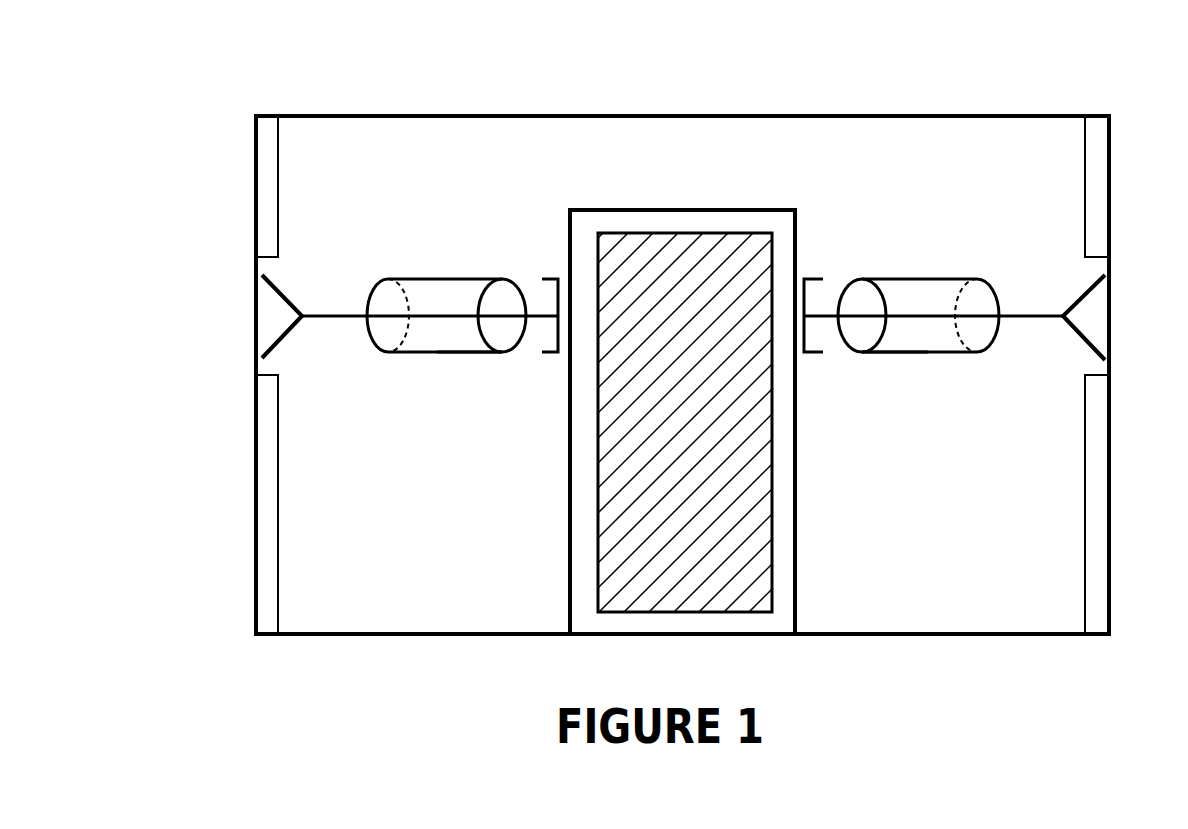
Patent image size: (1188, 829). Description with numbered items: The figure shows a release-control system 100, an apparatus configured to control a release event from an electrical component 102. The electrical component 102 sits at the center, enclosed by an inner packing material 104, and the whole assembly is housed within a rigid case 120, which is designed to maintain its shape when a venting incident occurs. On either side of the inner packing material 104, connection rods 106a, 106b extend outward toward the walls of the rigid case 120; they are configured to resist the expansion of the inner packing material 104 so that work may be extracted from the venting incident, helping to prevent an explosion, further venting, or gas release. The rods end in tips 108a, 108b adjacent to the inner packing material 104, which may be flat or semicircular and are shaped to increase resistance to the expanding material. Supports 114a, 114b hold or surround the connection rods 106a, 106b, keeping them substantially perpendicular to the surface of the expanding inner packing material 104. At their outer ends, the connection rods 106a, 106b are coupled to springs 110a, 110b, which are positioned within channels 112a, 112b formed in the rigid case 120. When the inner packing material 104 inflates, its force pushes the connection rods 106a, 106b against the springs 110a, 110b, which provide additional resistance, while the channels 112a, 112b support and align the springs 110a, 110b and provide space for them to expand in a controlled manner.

The release-control system 100 is at (216, 51).
The rigid case 120 is at (670, 116).
The spring 110a is at (262, 288).
The spring 110b is at (1100, 287).
The channel 112a is at (254, 374).
The channel 112b is at (1110, 375).
The connection rod 106a is at (325, 305).
The connection rod 106b is at (1050, 310).
The tip 108a is at (558, 277).
The tip 108b is at (805, 277).
The support 114a is at (437, 354).
The support 114b is at (928, 357).
The inner packing material 104 is at (796, 497).
The electrical component 102 is at (693, 614).